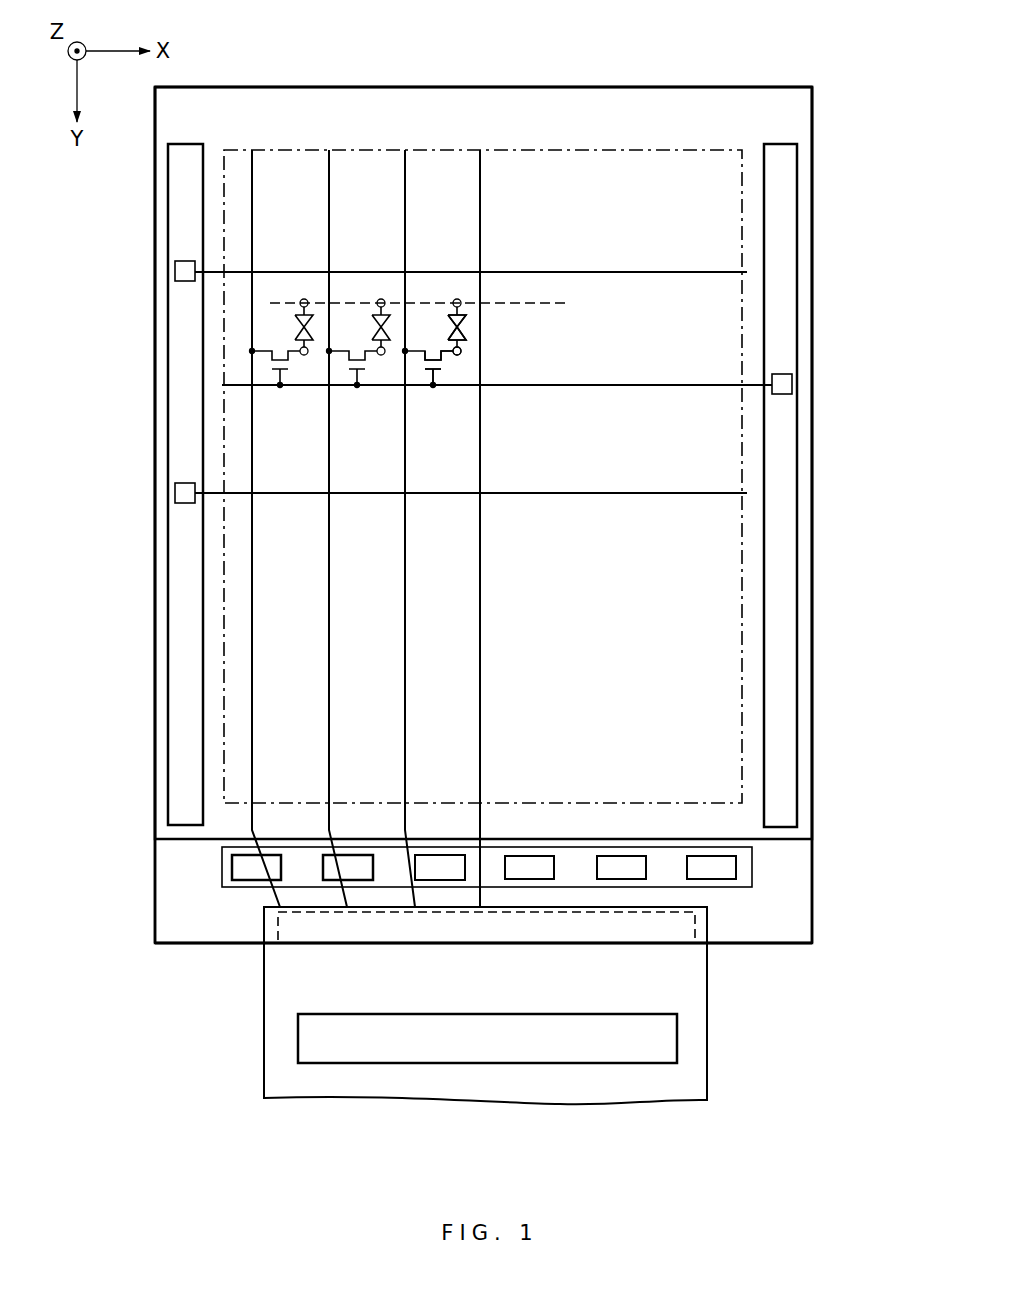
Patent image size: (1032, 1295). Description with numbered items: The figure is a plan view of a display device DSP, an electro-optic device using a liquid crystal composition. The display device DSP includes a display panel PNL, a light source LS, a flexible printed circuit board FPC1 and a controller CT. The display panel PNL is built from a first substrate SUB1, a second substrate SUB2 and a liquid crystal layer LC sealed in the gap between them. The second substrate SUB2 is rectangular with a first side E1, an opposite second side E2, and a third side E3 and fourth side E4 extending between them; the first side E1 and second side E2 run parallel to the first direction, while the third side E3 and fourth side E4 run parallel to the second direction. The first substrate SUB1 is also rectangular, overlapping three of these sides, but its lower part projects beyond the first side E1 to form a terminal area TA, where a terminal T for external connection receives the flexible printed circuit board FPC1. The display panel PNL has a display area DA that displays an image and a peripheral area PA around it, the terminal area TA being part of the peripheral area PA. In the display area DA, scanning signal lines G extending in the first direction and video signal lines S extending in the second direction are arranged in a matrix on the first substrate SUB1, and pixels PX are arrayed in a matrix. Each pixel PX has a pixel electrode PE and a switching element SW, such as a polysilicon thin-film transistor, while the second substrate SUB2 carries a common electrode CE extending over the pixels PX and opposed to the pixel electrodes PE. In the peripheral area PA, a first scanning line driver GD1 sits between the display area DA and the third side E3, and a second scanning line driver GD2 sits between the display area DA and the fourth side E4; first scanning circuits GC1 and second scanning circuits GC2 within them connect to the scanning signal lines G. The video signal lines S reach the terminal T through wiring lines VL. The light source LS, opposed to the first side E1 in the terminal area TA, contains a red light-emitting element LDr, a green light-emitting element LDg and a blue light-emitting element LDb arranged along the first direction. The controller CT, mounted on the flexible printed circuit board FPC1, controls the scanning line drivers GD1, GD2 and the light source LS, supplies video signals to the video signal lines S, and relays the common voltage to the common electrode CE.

The display device DSP is at (736, 85).
The display panel PNL is at (97, 962).
The first substrate SUB1 is at (205, 945).
The second substrate SUB2 is at (198, 842).
The display area DA is at (604, 184).
The peripheral area PA is at (678, 124).
The terminal area TA is at (783, 928).
The first side E1 is at (785, 848).
The second side E2 is at (431, 86).
The third side E3 is at (153, 482).
The fourth side E4 is at (814, 485).
The first scanning line driver GD1 is at (168, 340).
The second scanning line driver GD2 is at (797, 336).
The first scanning circuit GC1 is at (173, 274).
The second scanning circuit GC2 is at (793, 381).
The scanning signal line G is at (608, 272).
The video signal line S is at (252, 630).
The pixel PX is at (295, 290).
The common electrode CE is at (463, 302).
The liquid crystal layer LC is at (466, 328).
The pixel electrode PE is at (462, 356).
The switching element SW is at (448, 368).
The light source LS is at (736, 888).
The light-emitting element LDr is at (532, 855).
The light-emitting element LDg is at (622, 855).
The light-emitting element LDb is at (712, 855).
The wiring line VL is at (278, 896).
The terminal T is at (375, 935).
The flexible printed circuit board FPC1 is at (709, 1067).
The controller CT is at (552, 1064).